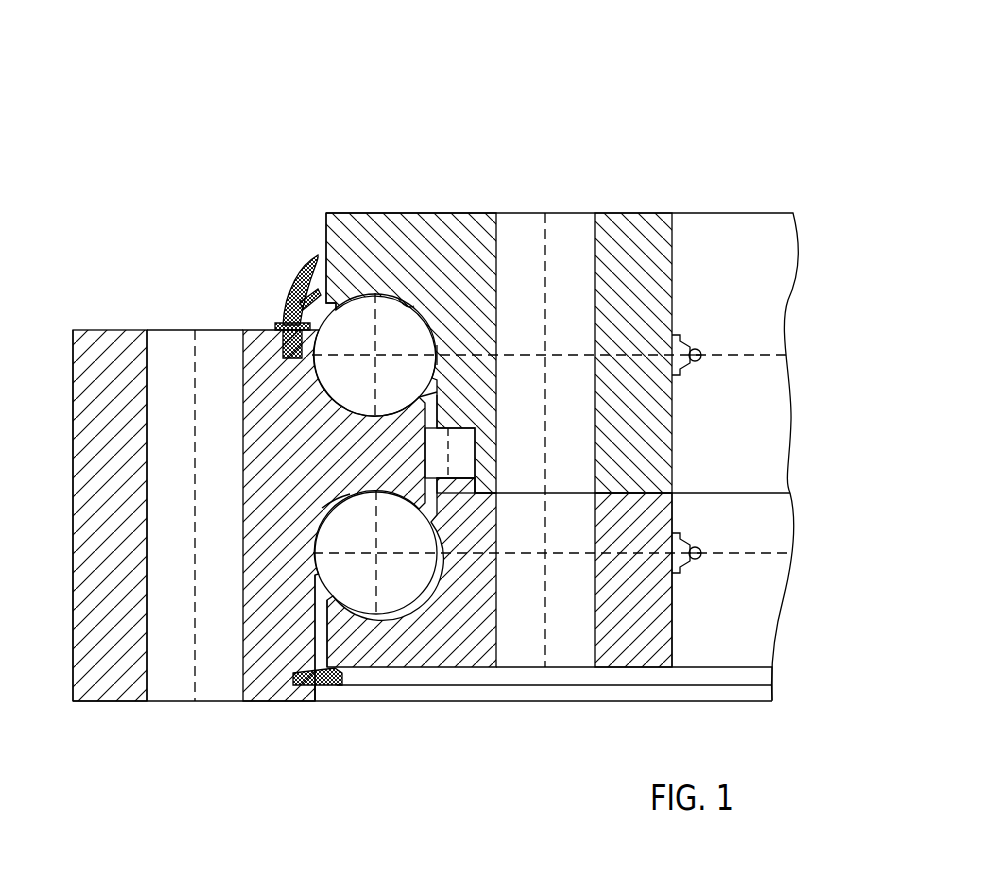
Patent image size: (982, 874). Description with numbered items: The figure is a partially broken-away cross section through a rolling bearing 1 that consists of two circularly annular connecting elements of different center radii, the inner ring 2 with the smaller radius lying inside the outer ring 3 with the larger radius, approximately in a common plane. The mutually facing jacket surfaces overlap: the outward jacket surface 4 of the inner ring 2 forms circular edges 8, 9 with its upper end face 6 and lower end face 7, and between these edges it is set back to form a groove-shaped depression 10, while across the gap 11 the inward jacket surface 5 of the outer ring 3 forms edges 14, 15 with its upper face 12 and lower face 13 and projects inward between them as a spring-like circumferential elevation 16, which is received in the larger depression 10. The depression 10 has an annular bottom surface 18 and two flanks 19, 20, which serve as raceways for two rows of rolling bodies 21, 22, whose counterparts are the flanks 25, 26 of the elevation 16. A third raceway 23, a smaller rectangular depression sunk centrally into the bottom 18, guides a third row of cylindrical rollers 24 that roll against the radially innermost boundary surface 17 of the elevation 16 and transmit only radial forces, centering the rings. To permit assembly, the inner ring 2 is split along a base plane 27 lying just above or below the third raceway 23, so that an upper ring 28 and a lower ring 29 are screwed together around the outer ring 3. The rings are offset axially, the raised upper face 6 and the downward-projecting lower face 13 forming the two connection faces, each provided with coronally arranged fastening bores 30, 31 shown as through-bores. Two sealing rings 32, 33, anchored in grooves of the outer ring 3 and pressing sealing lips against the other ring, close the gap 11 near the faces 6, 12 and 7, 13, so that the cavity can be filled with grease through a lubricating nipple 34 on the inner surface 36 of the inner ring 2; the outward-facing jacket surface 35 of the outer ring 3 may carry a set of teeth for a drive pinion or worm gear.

The rolling bearing 1 is at (532, 140).
The inner ring 2 is at (660, 212).
The outer ring 3 is at (87, 322).
The outward jacket surface 4 is at (325, 237).
The inward jacket surface 5 is at (320, 688).
The upper end face 6 is at (607, 213).
The lower end face 7 is at (632, 667).
The circular-ring-shaped edge 8 is at (368, 300).
The circular-ring-shaped edge 9 is at (325, 660).
The groove-shaped depression 10 is at (480, 510).
The gap 11 is at (320, 625).
The upper face 12 is at (125, 330).
The lower face 13 is at (105, 702).
The circular-ring-shaped edge 14 is at (378, 296).
The circular-ring-shaped edge 15 is at (318, 700).
The circumferential elevation 16 is at (383, 458).
The radially innermost boundary surface 17 is at (437, 418).
The annular bottom surface 18 is at (437, 382).
The flank 19 is at (412, 300).
The flank 20 is at (383, 605).
The rolling bodies 21 is at (420, 333).
The rolling bodies 22 is at (430, 582).
The third raceway 23 is at (475, 450).
The rolling bodies 24 is at (475, 467).
The flank 25 is at (330, 403).
The flank 26 is at (335, 505).
The base plane 27 is at (760, 495).
The upper ring 28 is at (773, 310).
The lower ring 29 is at (763, 578).
The fastening bores 30 is at (595, 640).
The fastening bores 31 is at (148, 360).
The sealing ring 32 is at (292, 295).
The sealing ring 33 is at (337, 683).
The lubricating nipple 34 is at (700, 357).
The jacket surface 35 is at (73, 680).
The inner surface 36 is at (672, 610).